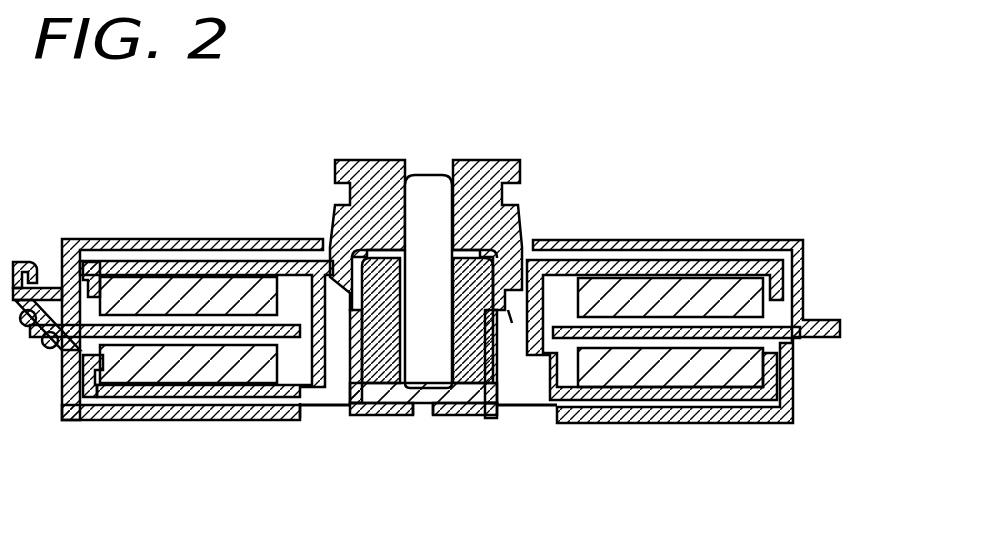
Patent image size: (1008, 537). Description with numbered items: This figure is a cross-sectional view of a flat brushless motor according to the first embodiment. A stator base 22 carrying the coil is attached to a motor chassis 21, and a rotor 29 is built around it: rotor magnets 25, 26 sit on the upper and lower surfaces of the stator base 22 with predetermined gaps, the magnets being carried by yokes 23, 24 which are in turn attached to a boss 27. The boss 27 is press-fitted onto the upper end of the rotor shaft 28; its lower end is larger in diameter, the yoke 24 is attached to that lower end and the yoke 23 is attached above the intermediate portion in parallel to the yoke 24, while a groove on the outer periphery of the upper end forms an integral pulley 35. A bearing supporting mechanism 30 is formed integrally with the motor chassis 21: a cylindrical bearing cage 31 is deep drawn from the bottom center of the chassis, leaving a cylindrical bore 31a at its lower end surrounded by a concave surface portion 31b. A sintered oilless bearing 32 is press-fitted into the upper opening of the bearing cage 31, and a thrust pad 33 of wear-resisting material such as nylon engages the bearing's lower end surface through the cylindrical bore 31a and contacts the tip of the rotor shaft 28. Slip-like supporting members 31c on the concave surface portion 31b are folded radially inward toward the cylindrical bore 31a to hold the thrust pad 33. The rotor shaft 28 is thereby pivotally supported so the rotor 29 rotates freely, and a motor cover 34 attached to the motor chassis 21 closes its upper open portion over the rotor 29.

The motor chassis 21 is at (84, 422).
The stator base 22 is at (738, 335).
The yoke 23 is at (660, 265).
The yoke 24 is at (742, 393).
The rotor magnet 25 is at (128, 287).
The rotor magnet 26 is at (147, 362).
The boss 27 is at (485, 178).
The rotor shaft 28 is at (423, 175).
The rotor 29 is at (82, 238).
The bearing supporting mechanism 30 is at (508, 320).
The bearing cage 31 is at (345, 345).
The cylindrical bore 31a is at (477, 420).
The concave surface portion 31b is at (300, 418).
The slip-like supporting members 31c is at (433, 417).
The sintered oilless bearing 32 is at (395, 405).
The thrust pad 33 is at (372, 395).
The motor cover 34 is at (195, 240).
The pulley 35 is at (333, 185).